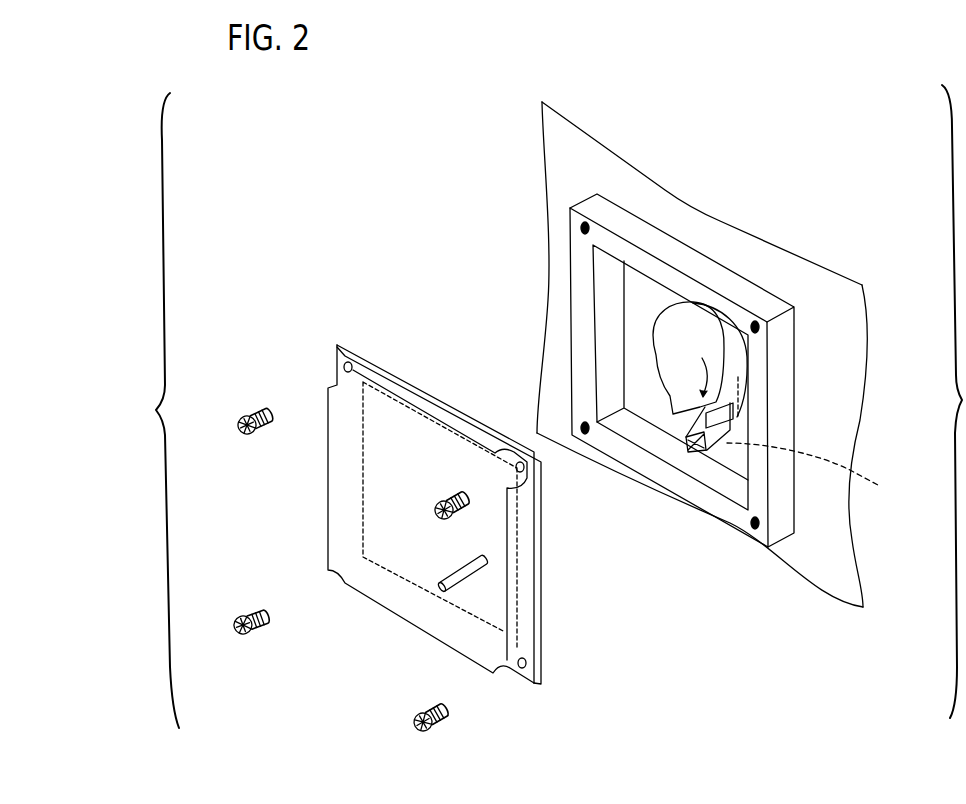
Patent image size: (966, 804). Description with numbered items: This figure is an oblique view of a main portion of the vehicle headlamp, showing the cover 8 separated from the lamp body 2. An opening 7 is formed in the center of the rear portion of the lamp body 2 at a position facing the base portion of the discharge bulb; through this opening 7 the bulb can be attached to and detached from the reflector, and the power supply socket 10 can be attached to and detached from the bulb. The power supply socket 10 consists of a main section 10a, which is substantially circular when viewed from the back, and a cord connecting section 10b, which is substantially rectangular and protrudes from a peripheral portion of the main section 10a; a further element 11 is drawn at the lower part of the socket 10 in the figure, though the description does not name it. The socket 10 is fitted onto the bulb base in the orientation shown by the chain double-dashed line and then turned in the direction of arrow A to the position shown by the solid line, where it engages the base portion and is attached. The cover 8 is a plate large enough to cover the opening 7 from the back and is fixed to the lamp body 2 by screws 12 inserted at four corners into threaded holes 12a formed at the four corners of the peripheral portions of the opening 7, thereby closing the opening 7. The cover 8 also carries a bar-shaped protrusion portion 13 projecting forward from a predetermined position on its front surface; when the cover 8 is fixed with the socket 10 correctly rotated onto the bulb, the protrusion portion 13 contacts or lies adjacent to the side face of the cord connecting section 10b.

The lamp body 2 is at (682, 205).
The opening 7 is at (602, 275).
The cover 8 is at (343, 490).
The power supply socket 10 is at (680, 334).
The main section 10a is at (722, 376).
The cord connecting section 10b is at (738, 397).
The base 11 is at (727, 430).
The screws 12 is at (245, 412).
The threaded holes 12a is at (588, 226).
The bar-shaped protrusion portion 13 is at (375, 653).